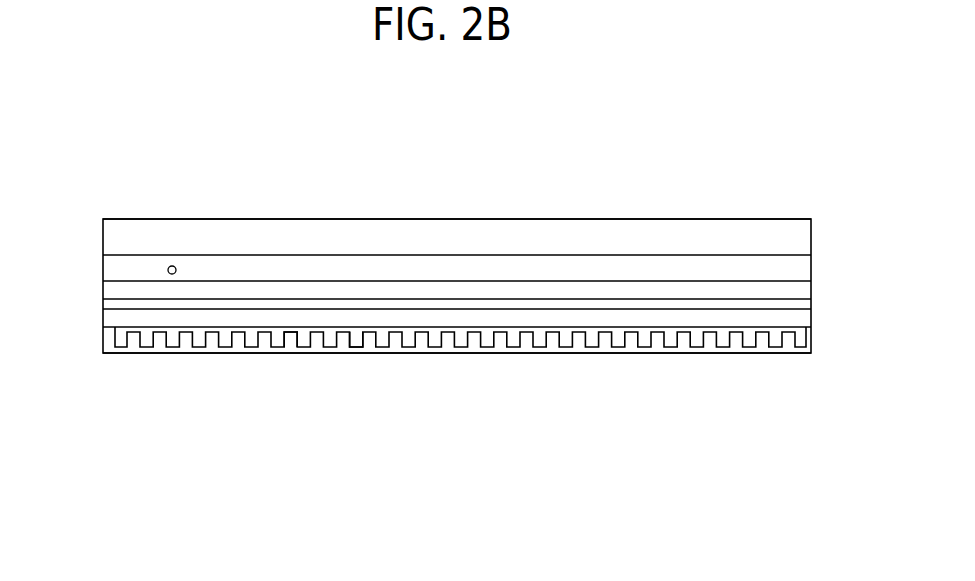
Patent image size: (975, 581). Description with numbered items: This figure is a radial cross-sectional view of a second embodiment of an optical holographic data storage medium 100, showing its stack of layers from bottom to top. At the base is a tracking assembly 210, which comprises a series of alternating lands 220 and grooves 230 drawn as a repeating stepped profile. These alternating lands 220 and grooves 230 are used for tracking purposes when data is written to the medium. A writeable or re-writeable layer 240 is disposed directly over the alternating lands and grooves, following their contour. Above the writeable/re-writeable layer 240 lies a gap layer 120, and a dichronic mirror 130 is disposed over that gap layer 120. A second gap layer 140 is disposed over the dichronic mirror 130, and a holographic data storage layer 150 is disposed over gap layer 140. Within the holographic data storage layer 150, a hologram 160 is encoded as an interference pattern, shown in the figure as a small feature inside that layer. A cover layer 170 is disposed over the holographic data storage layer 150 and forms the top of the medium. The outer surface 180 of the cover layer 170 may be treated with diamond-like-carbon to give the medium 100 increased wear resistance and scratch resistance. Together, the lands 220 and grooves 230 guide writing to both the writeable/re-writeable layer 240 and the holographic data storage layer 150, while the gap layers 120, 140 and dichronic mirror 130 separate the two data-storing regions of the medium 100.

The optical holographic data storage medium 100 is at (452, 392).
The gap layer 120 is at (805, 318).
The dichronic mirror 130 is at (110, 304).
The gap layer 140 is at (805, 292).
The holographic data storage layer 150 is at (115, 269).
The hologram 160 is at (172, 266).
The cover layer 170 is at (558, 240).
The outer surface 180 is at (643, 218).
The tracking assembly 210 is at (135, 347).
The lands 220 is at (290, 332).
The grooves 230 is at (355, 346).
The writeable or re-writeable layer 240 is at (117, 331).